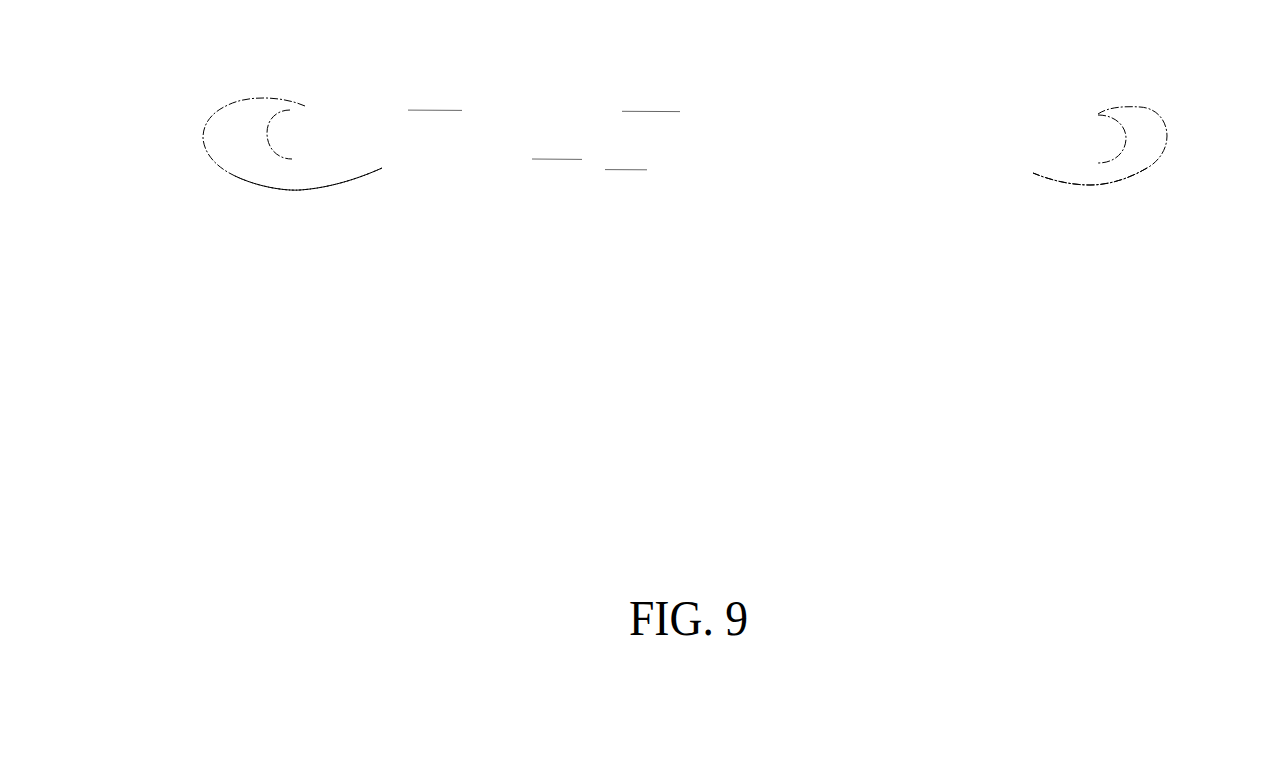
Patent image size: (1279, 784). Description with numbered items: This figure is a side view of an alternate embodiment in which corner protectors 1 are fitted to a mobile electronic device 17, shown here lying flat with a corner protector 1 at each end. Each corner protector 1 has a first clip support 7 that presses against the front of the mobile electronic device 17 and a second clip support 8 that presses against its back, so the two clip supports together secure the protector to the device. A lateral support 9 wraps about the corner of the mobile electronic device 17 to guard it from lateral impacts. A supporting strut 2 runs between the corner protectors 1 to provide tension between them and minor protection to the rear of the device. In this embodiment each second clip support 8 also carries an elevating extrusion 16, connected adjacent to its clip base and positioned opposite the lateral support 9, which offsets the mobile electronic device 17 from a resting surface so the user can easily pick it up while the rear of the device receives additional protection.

The corner protector 1 is at (168, 138).
The supporting strut 2 is at (702, 166).
The first clip support 7 is at (263, 105).
The second clip support 8 is at (225, 163).
The lateral support 9 is at (212, 136).
The elevating extrusion 16 is at (288, 180).
The mobile electronic device 17 is at (700, 118).